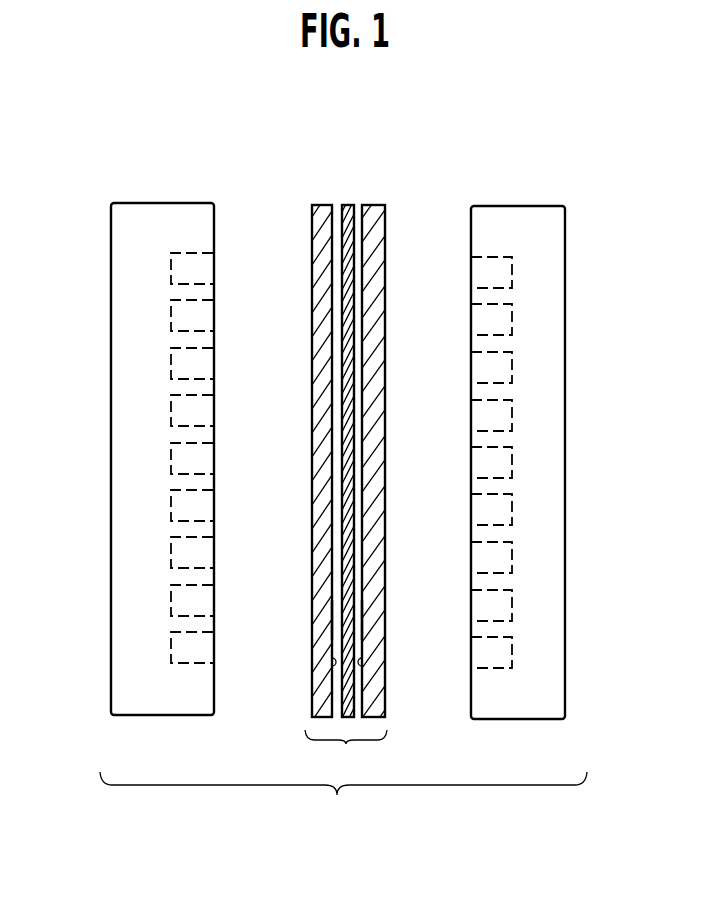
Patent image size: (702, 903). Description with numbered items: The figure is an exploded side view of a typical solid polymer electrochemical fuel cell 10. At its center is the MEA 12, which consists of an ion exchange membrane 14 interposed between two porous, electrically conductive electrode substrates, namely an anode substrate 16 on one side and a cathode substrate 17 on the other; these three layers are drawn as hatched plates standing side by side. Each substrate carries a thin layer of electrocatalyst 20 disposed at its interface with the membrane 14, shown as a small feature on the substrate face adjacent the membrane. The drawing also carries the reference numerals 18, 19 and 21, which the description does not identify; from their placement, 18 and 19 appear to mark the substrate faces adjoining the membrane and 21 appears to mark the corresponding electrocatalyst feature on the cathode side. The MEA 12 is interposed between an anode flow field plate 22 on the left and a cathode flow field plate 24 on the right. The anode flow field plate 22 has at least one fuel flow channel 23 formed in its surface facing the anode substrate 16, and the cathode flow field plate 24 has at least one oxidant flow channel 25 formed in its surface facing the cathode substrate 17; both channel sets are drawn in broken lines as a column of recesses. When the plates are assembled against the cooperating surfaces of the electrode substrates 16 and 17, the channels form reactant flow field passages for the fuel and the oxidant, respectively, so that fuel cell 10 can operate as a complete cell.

The solid polymer fuel cell 10 is at (343, 799).
The MEA 12 is at (346, 749).
The ion exchange membrane 14 is at (350, 203).
The anode substrate 16 is at (322, 203).
The cathode substrate 17 is at (373, 203).
The inner surface of first outer plate 18 is at (320, 617).
The inner surface of second outer plate 19 is at (375, 627).
The layer of electrocatalyst 20 is at (330, 668).
The spacer 21 is at (362, 668).
The anode flow field plate 22 is at (122, 323).
The fuel flow channel 23 is at (170, 455).
The cathode flow field plate 24 is at (552, 378).
The oxidant flow channel 25 is at (512, 465).